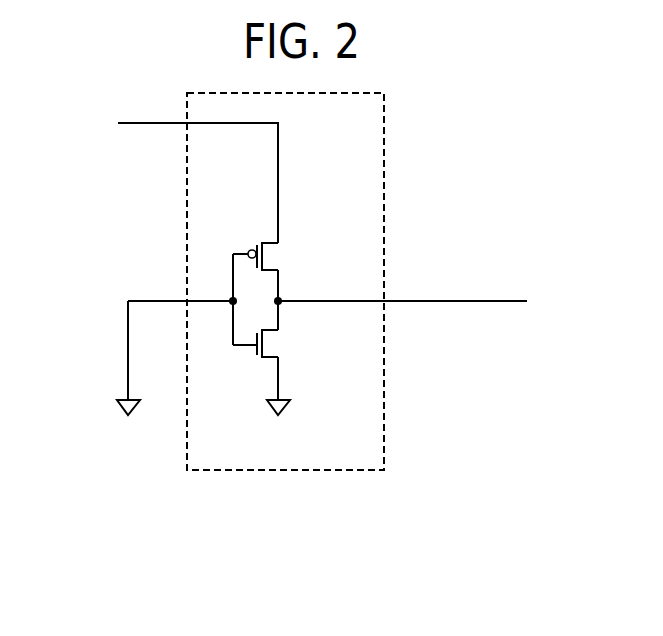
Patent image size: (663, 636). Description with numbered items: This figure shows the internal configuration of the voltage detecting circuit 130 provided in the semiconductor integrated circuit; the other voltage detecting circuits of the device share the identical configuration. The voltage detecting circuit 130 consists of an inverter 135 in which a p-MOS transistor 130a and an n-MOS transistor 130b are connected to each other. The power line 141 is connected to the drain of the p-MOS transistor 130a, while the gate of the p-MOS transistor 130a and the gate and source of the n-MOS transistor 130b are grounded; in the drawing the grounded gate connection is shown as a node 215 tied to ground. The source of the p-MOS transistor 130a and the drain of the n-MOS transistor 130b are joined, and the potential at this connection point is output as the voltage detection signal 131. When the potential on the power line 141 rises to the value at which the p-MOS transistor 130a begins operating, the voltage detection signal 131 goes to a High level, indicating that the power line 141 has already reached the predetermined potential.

The voltage detecting circuit 130 is at (385, 397).
The p-MOS transistor 130a is at (275, 262).
The n-MOS transistor 130b is at (275, 355).
The voltage detection signal 131 is at (448, 300).
The inverter 135 is at (291, 298).
The power line 141 is at (170, 175).
The input node 215 is at (147, 300).